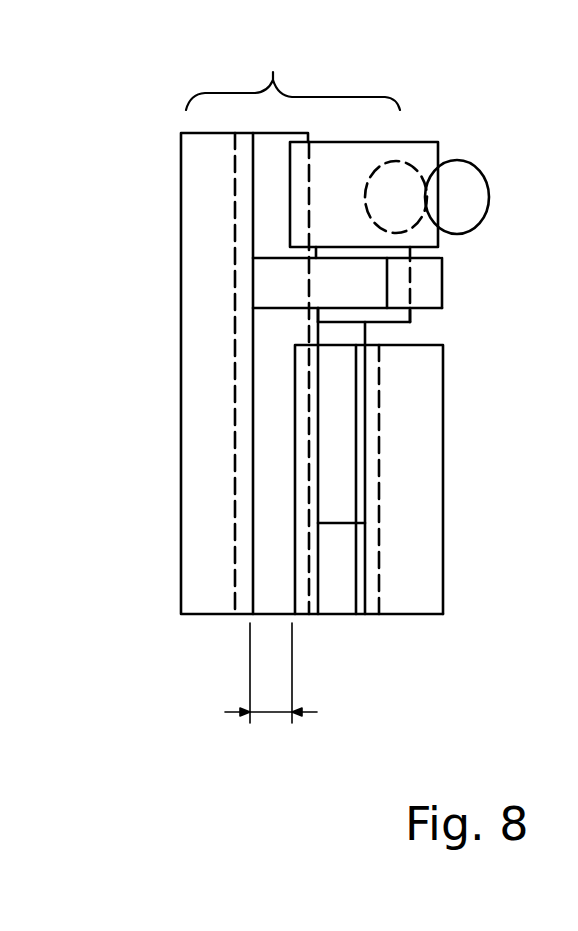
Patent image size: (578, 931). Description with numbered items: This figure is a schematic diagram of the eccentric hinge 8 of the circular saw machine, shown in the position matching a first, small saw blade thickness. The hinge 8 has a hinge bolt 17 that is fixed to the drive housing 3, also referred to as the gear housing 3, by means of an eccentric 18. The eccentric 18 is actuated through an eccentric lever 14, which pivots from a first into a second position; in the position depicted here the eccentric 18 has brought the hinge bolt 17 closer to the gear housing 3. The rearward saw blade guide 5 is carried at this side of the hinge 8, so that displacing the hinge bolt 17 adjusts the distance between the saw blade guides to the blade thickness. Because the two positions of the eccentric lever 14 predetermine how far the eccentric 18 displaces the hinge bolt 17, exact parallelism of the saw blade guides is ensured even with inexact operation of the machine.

The drive housing 3 is at (208, 402).
The rearward saw blade guide 5 is at (428, 405).
The hinge 8 is at (293, 63).
The eccentric lever 14 is at (470, 193).
The hinge bolt 17 is at (337, 607).
The eccentric 18 is at (393, 313).